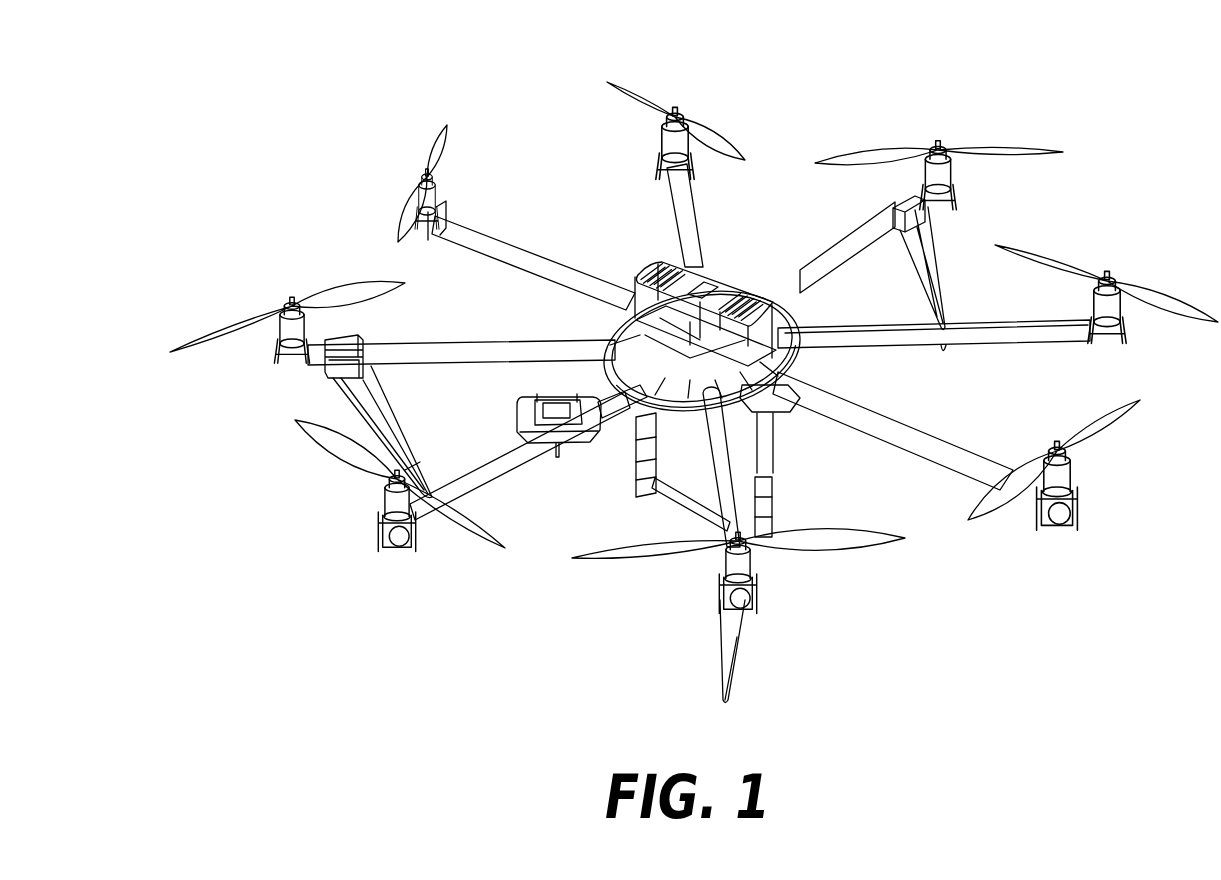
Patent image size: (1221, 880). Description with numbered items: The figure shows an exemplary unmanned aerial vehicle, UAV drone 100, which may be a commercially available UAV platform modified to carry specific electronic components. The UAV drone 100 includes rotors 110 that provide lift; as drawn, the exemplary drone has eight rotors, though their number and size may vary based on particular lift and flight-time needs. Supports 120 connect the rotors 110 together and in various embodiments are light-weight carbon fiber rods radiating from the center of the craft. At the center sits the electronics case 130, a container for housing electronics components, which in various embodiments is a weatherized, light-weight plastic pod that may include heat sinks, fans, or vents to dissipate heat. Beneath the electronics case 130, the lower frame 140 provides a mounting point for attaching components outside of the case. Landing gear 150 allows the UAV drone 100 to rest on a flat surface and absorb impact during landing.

The UAV drone 100 is at (287, 107).
The rotors 110 is at (292, 305).
The supports 120 is at (495, 235).
The electronics case 130 is at (715, 278).
The lower frame 140 is at (646, 450).
The landing gear 150 is at (938, 262).